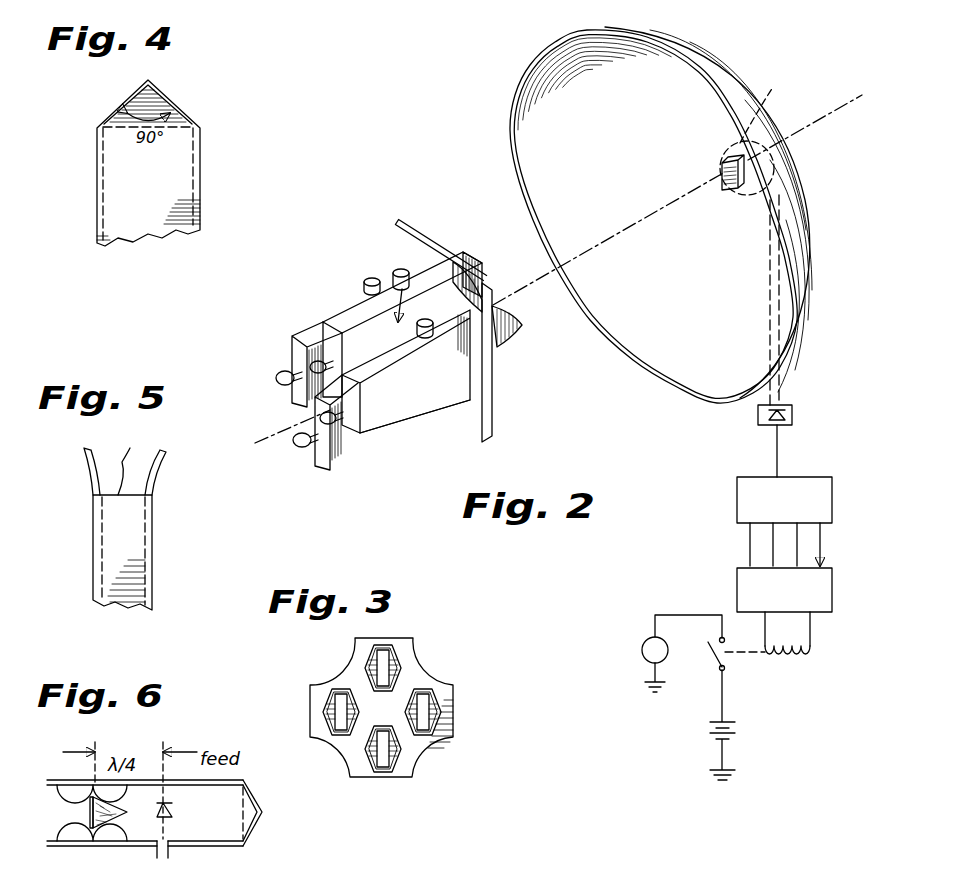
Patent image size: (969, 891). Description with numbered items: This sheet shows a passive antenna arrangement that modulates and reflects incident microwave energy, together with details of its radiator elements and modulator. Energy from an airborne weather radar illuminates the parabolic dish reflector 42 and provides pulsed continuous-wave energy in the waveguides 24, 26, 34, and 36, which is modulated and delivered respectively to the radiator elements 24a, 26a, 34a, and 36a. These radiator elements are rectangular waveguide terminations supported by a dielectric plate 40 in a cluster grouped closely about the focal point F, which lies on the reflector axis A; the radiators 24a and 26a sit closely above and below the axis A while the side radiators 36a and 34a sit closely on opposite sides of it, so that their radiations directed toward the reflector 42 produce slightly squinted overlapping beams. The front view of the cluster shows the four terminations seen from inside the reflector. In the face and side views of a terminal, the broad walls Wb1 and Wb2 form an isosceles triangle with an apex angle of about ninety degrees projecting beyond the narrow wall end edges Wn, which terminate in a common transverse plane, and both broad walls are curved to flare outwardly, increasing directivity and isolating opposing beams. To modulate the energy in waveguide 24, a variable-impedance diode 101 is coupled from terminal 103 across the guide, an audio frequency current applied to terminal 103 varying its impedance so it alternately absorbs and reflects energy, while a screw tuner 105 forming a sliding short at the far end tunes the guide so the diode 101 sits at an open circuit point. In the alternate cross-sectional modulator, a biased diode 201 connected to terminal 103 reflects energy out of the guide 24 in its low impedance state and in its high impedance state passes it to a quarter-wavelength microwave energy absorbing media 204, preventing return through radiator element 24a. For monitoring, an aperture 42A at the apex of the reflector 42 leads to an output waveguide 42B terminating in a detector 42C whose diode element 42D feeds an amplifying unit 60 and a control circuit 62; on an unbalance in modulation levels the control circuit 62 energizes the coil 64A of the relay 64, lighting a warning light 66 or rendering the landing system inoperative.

In FIG. 6, the waveguide 24 is at (216, 843).
In FIG. 2, the waveguide 24 is at (343, 322).
In FIG. 6, the radiator element 24a is at (243, 781).
In FIG. 2, the radiator element 24a is at (460, 256).
In FIG. 2, the waveguide 26 is at (342, 460).
In FIG. 2, the radiator element 26a is at (450, 399).
In FIG. 2, the waveguide 34 is at (368, 425).
In FIG. 2, the radiator element 34a is at (480, 350).
In FIG. 2, the waveguide 36 is at (313, 332).
In FIG. 2, the radiator element 36a is at (372, 278).
In FIG. 2, the dielectric plate 40 is at (397, 222).
In FIG. 2, the diode 101 is at (462, 268).
In FIG. 6, the terminal 103 is at (157, 852).
In FIG. 2, the terminal 103 is at (403, 269).
In FIG. 2, the screw tuner 105 is at (312, 362).
In FIG. 2, the focal point F is at (455, 262).
In FIG. 2, the reflector axis A is at (257, 443).
In FIG. 2, the parabolic dish reflector 42 is at (816, 226).
In FIG. 2, the window or aperture 42A is at (720, 176).
In FIG. 2, the output waveguide 42B is at (752, 130).
In FIG. 2, the detector 42C is at (793, 413).
In FIG. 2, the solid state diode element 42D is at (762, 422).
In FIG. 2, the amplifying unit 60 is at (830, 477).
In FIG. 2, the control circuit 62 is at (832, 568).
In FIG. 2, the relay 64 is at (760, 704).
In FIG. 2, the coil 64A is at (812, 655).
In FIG. 2, the warning light 66 is at (642, 647).
In FIG. 6, the diode 201 is at (176, 811).
In FIG. 6, the microwave energy absorbing media 204 is at (107, 827).
In FIG. 5, the broad wall Wb1 is at (165, 462).
In FIG. 5, the broad wall Wb2 is at (87, 470).
In FIG. 5, the narrow wall end edges Wn is at (127, 461).